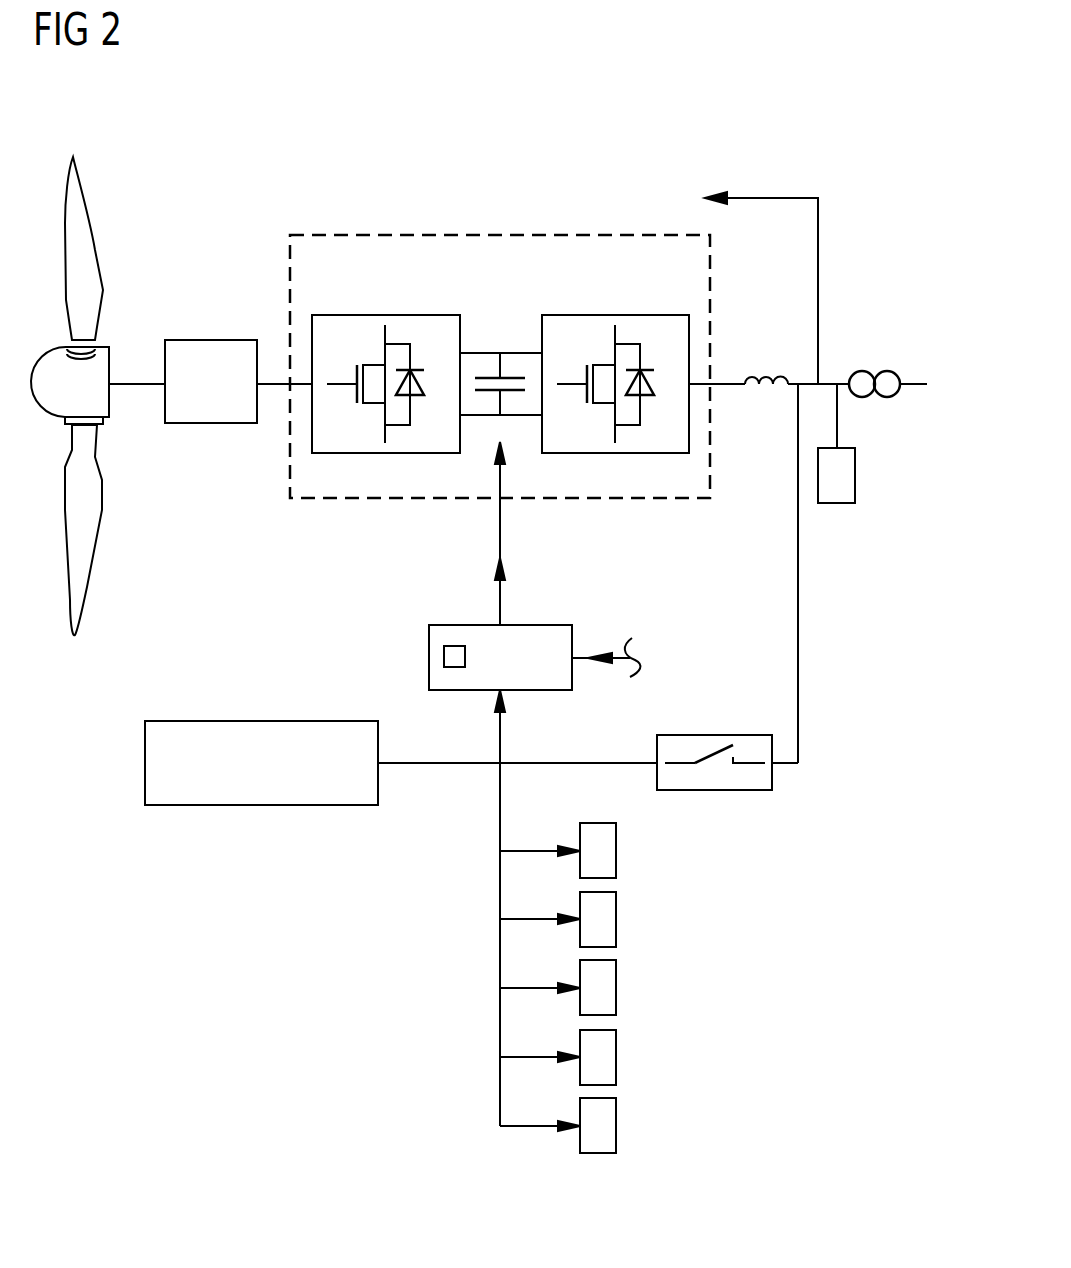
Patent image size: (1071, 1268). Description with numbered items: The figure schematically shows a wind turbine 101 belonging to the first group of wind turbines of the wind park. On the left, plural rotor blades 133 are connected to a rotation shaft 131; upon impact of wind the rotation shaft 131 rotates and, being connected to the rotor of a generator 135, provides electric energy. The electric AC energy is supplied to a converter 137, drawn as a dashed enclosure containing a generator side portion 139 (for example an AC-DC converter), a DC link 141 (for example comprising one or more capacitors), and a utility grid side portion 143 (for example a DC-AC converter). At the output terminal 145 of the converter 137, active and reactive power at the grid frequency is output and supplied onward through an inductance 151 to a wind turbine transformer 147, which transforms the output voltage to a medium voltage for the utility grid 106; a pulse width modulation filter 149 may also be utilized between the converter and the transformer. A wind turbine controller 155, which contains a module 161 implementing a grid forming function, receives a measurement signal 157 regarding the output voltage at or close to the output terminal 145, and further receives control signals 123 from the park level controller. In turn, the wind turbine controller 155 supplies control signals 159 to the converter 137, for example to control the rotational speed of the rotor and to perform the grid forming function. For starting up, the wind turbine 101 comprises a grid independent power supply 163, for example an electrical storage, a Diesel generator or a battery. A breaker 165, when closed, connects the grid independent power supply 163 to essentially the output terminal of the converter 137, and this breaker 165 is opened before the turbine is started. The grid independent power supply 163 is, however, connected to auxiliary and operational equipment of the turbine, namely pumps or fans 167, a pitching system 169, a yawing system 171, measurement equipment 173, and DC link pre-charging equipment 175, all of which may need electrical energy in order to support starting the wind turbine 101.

The wind turbine 101 is at (243, 143).
The utility grid 106 is at (907, 315).
The control signals 123 is at (590, 652).
The rotation shaft 131 is at (143, 383).
The rotor blades 133 is at (88, 208).
The generator 135 is at (210, 340).
The converter 137 is at (448, 206).
The generator side portion 139 is at (386, 315).
The DC link 141 is at (516, 322).
The utility grid side portion 143 is at (614, 315).
The output terminal 145 is at (690, 387).
The wind turbine transformer 147 is at (866, 371).
The pulse width modulation filter 149 is at (855, 474).
The inductance 151 is at (768, 377).
The wind turbine controller 155 is at (429, 658).
The measurement signal 157 is at (712, 196).
The control signals 159 is at (503, 567).
The module 161 is at (466, 657).
The grid independent power supply 163 is at (262, 721).
The breaker 165 is at (714, 735).
The pumps or fans 167 is at (617, 852).
The pitching system 169 is at (617, 920).
The yawing system 171 is at (617, 989).
The measurement equipment 173 is at (617, 1058).
The DC link pre-charging equipment 175 is at (617, 1127).